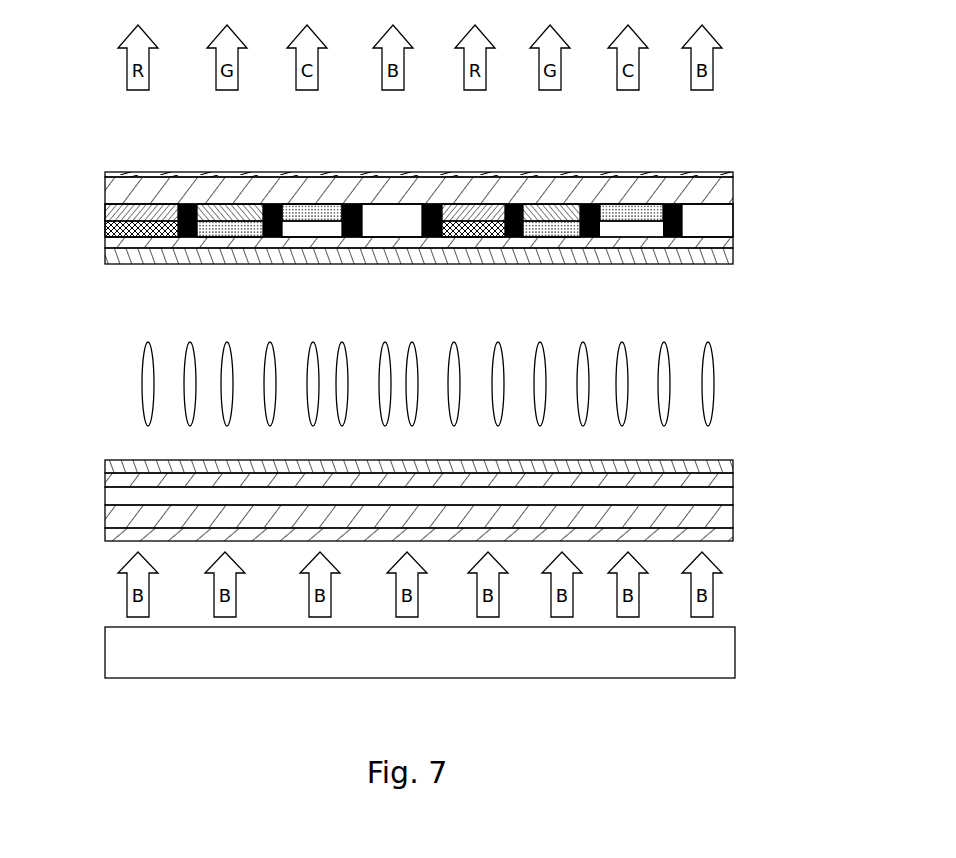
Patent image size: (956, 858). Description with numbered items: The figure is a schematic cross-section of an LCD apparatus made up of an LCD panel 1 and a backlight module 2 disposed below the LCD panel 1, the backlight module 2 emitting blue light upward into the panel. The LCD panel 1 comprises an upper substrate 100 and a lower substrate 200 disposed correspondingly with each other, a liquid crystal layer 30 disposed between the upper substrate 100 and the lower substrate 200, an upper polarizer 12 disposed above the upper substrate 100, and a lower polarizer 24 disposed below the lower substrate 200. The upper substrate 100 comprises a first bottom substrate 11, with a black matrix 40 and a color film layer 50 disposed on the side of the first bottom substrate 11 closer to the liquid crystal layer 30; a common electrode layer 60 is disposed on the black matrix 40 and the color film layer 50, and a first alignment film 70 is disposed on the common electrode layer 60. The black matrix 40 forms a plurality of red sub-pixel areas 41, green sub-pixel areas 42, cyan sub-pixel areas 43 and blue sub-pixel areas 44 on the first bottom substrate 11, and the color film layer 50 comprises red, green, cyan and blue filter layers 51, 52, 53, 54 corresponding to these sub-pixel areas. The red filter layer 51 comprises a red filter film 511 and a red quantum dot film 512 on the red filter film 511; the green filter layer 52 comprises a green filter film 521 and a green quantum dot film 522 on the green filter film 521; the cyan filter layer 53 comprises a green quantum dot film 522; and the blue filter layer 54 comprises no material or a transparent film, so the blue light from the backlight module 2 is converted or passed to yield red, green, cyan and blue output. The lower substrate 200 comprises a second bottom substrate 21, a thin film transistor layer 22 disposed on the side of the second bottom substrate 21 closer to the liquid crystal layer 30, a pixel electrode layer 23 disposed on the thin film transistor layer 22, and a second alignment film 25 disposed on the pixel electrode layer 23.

The LCD panel 1 is at (102, 155).
The backlight module 2 is at (105, 653).
The first bottom substrate 11 is at (737, 192).
The upper polarizer 12 is at (724, 176).
The second bottom substrate 21 is at (673, 513).
The thin film transistor layer 22 is at (690, 498).
The pixel electrode layer 23 is at (695, 483).
The lower polarizer 24 is at (667, 535).
The second alignment film 25 is at (700, 466).
The liquid crystal layer 30 is at (710, 385).
The black matrix 40 is at (672, 237).
The red sub-pixel areas 41 is at (122, 222).
The green sub-pixel areas 42 is at (222, 217).
The cyan sub-pixel areas 43 is at (308, 204).
The blue sub-pixel areas 44 is at (388, 200).
The color film layer 50 is at (695, 221).
The red filter layer 51 is at (175, 292).
The green filter layer 52 is at (195, 292).
The cyan filter layer 53 is at (328, 292).
The blue filter layer 54 is at (395, 220).
The common electrode layer 60 is at (708, 247).
The first alignment film 70 is at (718, 254).
The upper substrate 100 is at (785, 178).
The lower substrate 200 is at (790, 430).
The red filter film 511 is at (122, 210).
The red quantum dot film 512 is at (158, 220).
The green filter film 521 is at (215, 210).
The green quantum dot film 522 is at (252, 230).